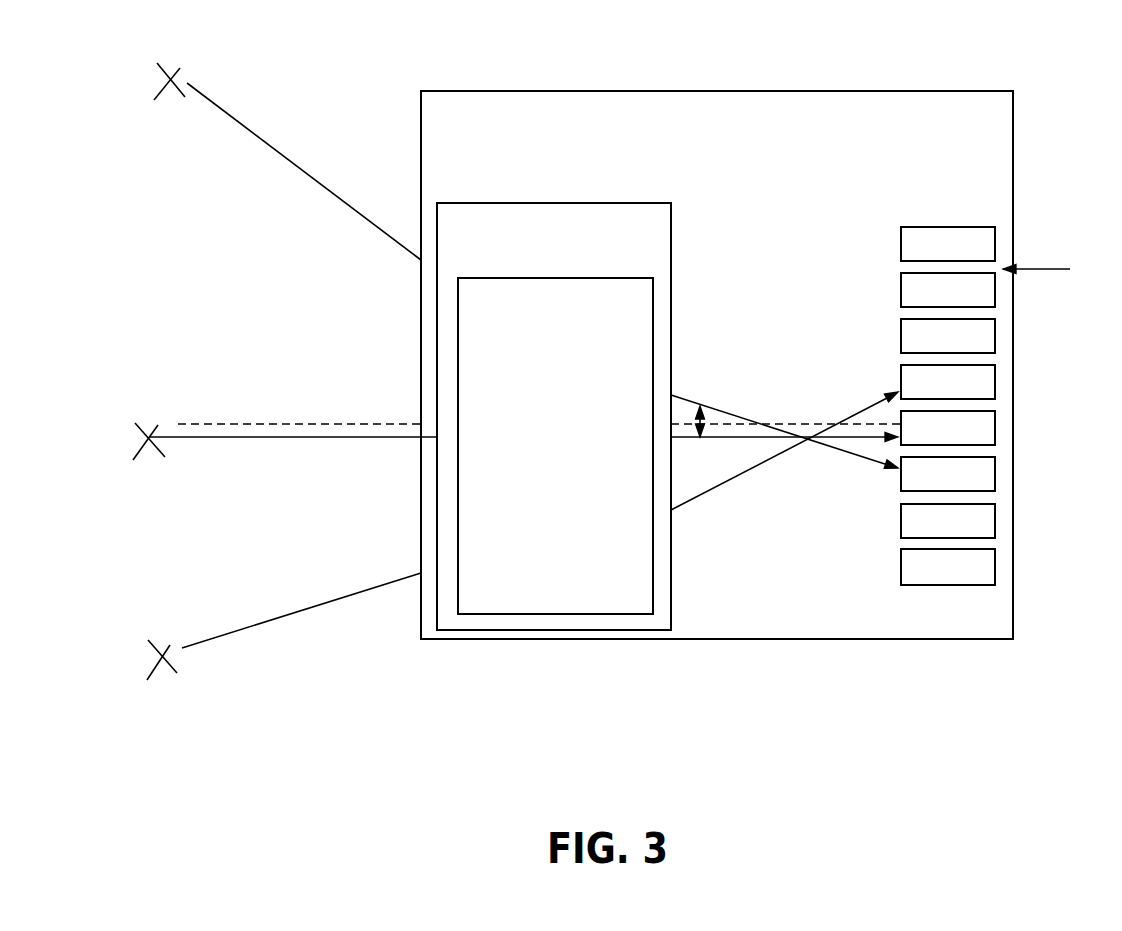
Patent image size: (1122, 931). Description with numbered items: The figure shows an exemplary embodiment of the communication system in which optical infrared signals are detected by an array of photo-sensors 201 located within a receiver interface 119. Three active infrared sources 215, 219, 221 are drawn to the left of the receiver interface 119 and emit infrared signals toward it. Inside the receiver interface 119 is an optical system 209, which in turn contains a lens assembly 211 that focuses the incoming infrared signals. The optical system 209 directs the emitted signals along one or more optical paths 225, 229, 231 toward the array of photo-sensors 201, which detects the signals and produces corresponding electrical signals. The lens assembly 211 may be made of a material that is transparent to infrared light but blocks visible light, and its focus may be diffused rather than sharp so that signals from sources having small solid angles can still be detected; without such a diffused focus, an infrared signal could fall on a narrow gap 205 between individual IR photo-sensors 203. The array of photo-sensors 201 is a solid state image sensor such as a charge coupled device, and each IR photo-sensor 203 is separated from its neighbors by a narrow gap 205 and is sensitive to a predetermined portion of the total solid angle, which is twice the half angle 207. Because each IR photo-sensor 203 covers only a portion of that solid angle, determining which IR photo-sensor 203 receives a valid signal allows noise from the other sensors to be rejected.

The receiver interface 119 is at (676, 91).
The array of photo-sensors 201 is at (977, 381).
The IR photo-sensor 203 is at (977, 248).
The narrow gap 205 is at (1062, 269).
The half angle 207 is at (708, 418).
The optical system 209 is at (490, 203).
The lens assembly 211 is at (653, 308).
The active infrared source 215 is at (160, 90).
The active infrared source 219 is at (143, 437).
The active infrared source 221 is at (157, 661).
The optical path 225 is at (833, 455).
The optical path 229 is at (740, 438).
The optical path 231 is at (870, 402).